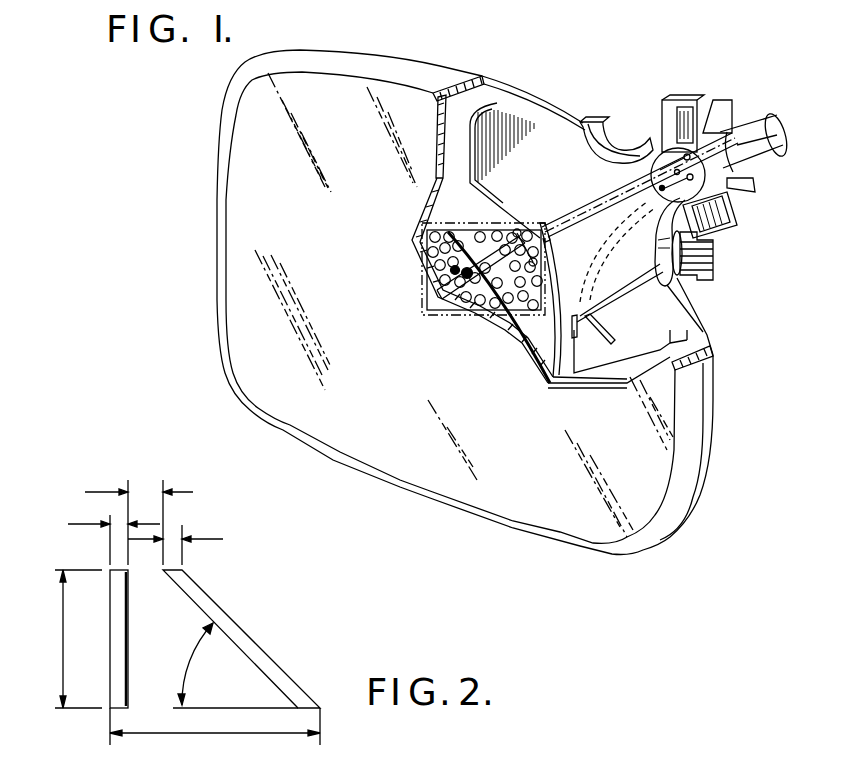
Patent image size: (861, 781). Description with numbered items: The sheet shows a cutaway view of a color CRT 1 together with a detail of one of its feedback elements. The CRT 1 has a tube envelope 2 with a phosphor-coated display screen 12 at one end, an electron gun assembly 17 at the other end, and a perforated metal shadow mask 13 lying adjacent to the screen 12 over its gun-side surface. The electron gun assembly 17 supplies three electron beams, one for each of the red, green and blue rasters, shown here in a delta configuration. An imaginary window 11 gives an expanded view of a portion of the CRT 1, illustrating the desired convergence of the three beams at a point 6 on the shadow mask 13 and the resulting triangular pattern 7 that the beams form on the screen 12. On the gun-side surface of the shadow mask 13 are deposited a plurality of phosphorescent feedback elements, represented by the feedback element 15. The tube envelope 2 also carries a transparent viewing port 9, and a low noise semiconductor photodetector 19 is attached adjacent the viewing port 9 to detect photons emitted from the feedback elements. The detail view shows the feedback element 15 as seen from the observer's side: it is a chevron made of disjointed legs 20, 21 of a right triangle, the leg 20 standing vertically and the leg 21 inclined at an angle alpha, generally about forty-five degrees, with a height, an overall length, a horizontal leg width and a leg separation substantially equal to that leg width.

In FIG. 1, the CRT 1 is at (318, 48).
In FIG. 1, the tube envelope 2 is at (547, 113).
In FIG. 1, the point 6 is at (523, 236).
In FIG. 1, the triangular pattern 7 is at (445, 293).
In FIG. 1, the transparent viewing port 9 is at (664, 290).
In FIG. 1, the imaginary window 11 is at (445, 317).
In FIG. 1, the phosphor-coated display screen 12 is at (457, 227).
In FIG. 1, the perforated metal shadow mask 13 is at (484, 92).
In FIG. 1, the feedback element 15 is at (577, 317).
In FIG. 2, the feedback element 15 is at (225, 457).
In FIG. 1, the electron gun assembly 17 is at (757, 115).
In FIG. 1, the low noise semiconductor photodetector 19 is at (718, 263).
In FIG. 2, the leg 20 is at (128, 627).
In FIG. 2, the leg 21 is at (266, 637).